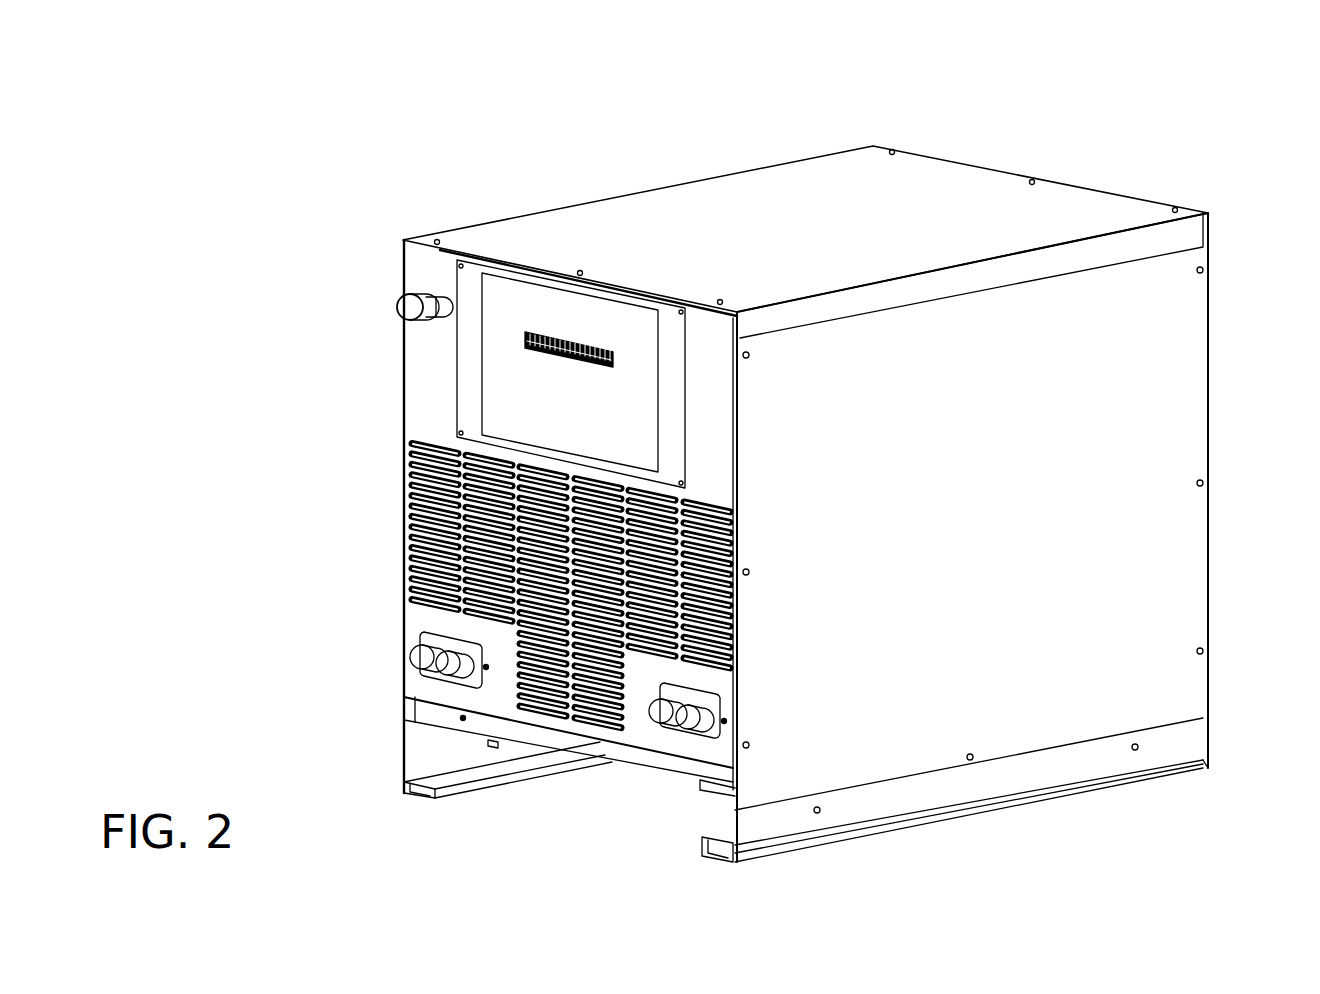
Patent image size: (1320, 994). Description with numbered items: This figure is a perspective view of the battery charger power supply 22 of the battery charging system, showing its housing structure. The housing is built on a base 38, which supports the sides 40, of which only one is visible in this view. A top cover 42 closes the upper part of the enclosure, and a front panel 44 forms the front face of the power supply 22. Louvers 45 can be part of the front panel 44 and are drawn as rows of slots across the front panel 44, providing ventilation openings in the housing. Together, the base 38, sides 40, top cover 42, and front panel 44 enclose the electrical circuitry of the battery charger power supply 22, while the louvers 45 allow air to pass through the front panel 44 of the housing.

The battery charger power supply 22 is at (1170, 104).
The base 38 is at (1105, 775).
The sides 40 is at (1198, 335).
The top cover 42 is at (617, 207).
The front panel 44 is at (418, 372).
The louvers 45 is at (412, 512).